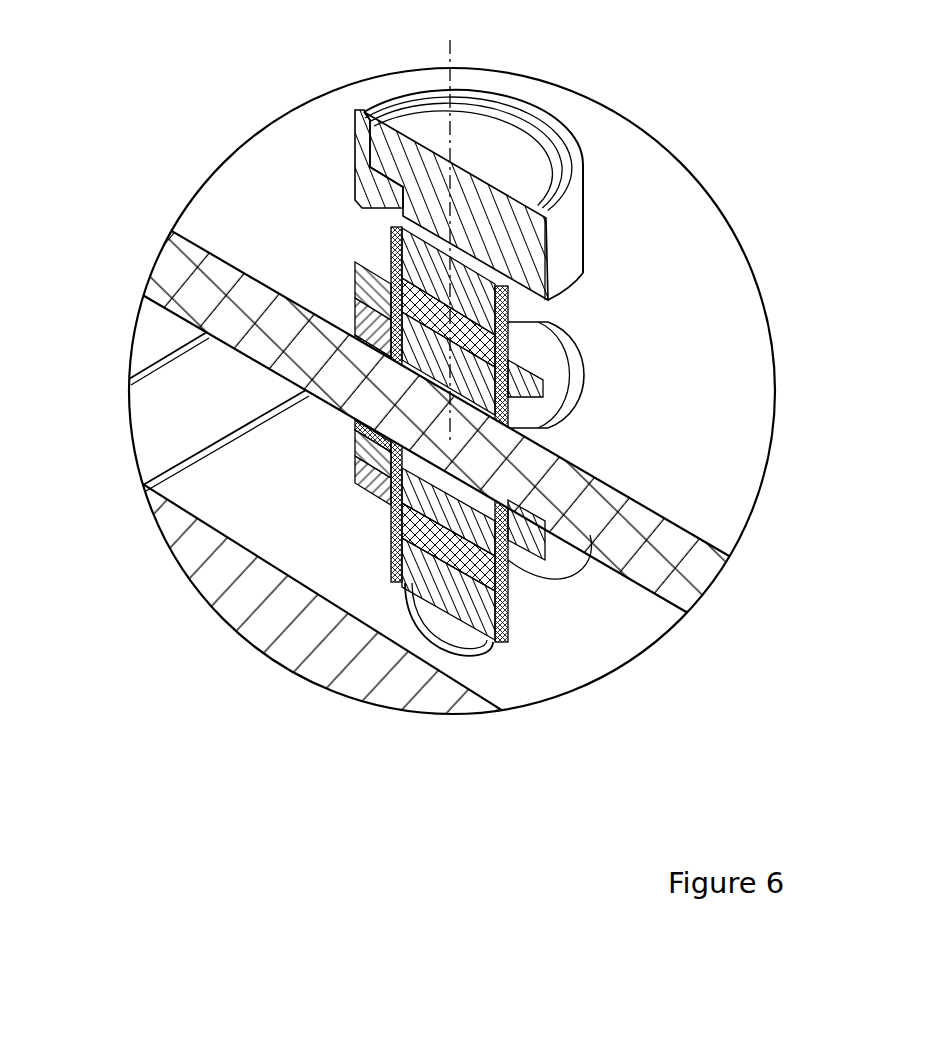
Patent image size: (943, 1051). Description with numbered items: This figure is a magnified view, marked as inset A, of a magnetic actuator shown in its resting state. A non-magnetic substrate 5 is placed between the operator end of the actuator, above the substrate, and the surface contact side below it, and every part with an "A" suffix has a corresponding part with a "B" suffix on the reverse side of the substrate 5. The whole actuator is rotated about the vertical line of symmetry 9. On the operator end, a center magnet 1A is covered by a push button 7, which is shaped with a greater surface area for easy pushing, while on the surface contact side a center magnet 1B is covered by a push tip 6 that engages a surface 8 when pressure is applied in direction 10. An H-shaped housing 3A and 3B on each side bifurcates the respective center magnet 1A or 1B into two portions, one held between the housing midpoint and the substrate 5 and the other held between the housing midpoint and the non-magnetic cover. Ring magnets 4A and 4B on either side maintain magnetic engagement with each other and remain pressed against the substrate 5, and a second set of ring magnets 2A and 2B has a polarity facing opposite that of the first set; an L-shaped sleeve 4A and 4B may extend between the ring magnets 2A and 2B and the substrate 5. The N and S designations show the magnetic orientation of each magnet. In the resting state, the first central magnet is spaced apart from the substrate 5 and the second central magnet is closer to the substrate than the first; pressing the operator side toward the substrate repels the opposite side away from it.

The center magnet 1A is at (478, 216).
The center magnet 1B is at (392, 540).
The ring magnet 2A is at (560, 367).
The ring magnet 2B is at (356, 432).
The H-shaped housing 3A is at (508, 340).
The H-shaped housing 3B is at (398, 483).
The ring magnet / L-shaped sleeve 4A is at (555, 437).
The ring magnet / L-shaped sleeve 4B is at (357, 428).
The non-magnetic substrate 5 is at (610, 532).
The push tip 6 is at (410, 670).
The push button 7 is at (488, 205).
The surface 8 is at (407, 683).
The vertical line of symmetry 9 is at (450, 227).
The direction of pressure 10 is at (464, 178).
The inset A is at (768, 470).
The north magnetic pole N is at (407, 162).
The south magnetic pole S is at (405, 305).